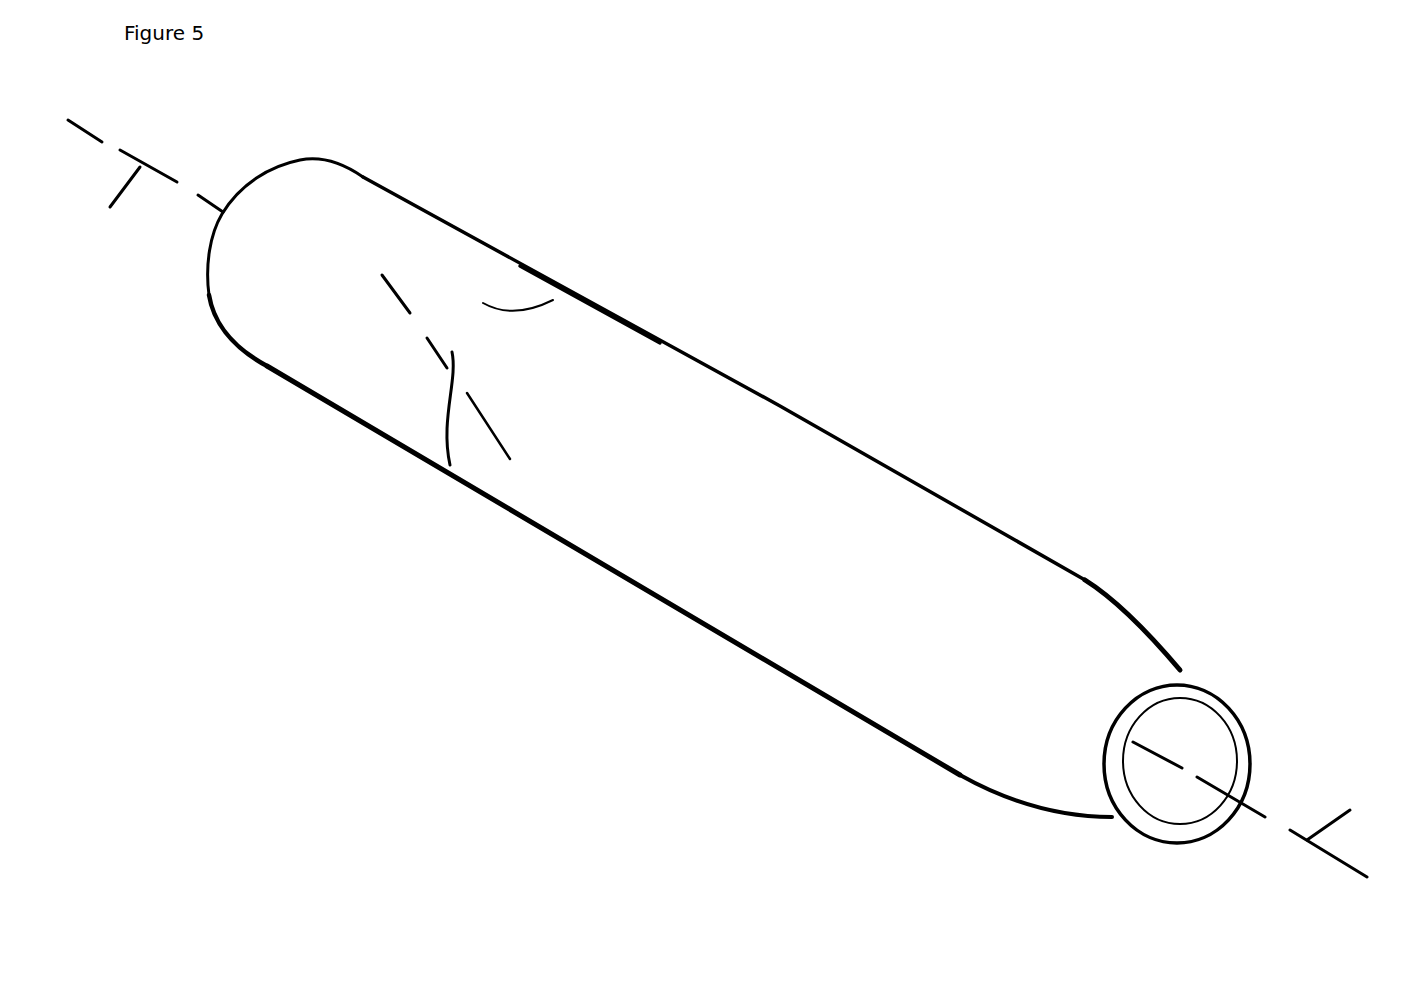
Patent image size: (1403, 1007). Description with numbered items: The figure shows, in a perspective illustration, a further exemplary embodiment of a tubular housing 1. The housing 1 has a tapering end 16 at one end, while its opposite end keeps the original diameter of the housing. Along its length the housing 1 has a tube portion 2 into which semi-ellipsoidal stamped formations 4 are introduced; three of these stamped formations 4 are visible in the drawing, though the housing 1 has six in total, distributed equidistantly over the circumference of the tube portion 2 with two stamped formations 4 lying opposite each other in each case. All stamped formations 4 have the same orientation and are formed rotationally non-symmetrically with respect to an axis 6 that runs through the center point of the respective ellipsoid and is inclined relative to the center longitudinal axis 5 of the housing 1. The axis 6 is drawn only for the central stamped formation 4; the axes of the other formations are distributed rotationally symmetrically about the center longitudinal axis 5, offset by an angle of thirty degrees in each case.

The housing 1 is at (982, 227).
The tube portion 2 is at (667, 277).
The semi-ellipsoidal stamped formations 4 is at (597, 224).
The center longitudinal axis 5 is at (73, 250).
The axis 6 is at (430, 222).
The tapering end 16 is at (1297, 672).